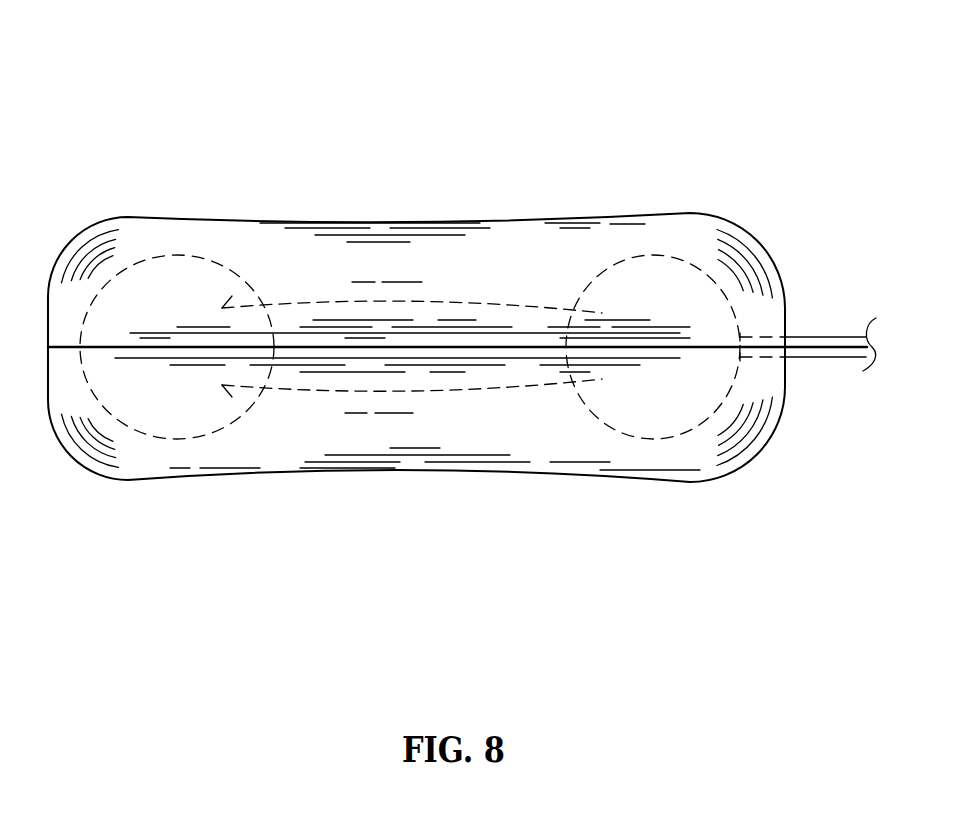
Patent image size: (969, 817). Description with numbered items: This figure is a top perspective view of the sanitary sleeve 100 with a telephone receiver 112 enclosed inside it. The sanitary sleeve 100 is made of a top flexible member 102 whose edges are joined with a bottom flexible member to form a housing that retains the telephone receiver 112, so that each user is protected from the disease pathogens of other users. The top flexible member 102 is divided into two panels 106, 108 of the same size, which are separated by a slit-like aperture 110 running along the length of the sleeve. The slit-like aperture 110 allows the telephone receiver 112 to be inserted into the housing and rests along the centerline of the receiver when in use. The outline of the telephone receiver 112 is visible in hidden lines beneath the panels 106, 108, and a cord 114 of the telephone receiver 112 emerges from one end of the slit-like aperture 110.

The sanitary sleeve 100 is at (397, 76).
The top flexible member 102 is at (192, 220).
The first panel 106 is at (418, 262).
The second panel 108 is at (438, 425).
The slit-like aperture 110 is at (672, 347).
The telephone receiver 112 is at (612, 257).
The cord 114 is at (821, 337).